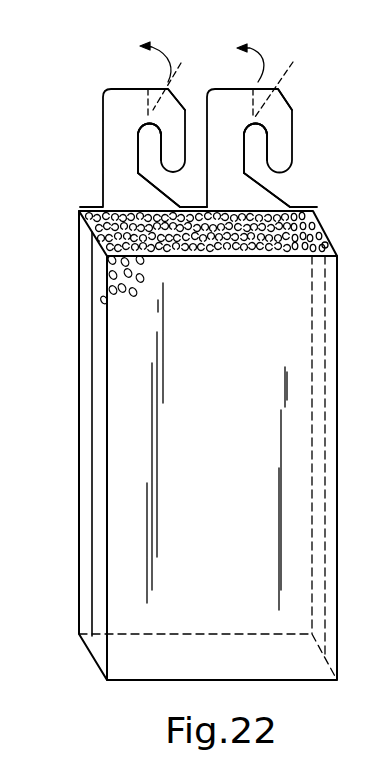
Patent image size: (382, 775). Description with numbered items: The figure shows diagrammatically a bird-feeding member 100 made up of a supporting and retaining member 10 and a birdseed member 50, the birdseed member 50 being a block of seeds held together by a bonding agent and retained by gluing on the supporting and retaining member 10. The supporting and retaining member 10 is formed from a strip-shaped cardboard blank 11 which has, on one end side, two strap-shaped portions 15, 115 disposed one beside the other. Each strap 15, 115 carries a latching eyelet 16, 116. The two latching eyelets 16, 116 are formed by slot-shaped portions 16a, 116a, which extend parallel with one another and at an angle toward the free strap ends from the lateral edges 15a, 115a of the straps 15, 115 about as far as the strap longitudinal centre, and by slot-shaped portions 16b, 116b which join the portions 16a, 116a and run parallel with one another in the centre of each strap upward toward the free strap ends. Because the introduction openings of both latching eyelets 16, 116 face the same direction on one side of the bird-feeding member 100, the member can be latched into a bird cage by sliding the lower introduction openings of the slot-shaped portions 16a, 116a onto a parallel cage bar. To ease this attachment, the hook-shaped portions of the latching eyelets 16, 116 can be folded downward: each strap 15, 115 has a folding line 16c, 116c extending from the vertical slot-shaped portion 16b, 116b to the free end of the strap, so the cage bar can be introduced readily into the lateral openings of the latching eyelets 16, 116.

The bird-feeding member 100 is at (66, 466).
The supporting and retaining member 10 is at (74, 400).
The blank 11 is at (87, 340).
The birdseed member 50 is at (130, 538).
The strap-shaped portion 15 is at (122, 98).
The lateral edge of the strap 15a is at (188, 106).
The latching eyelet 16 is at (142, 152).
The slot-shaped portion 16a is at (168, 178).
The slot-shaped portion 16b is at (143, 135).
The folding line 16c is at (168, 76).
The strap-shaped portion 115 is at (229, 100).
The lateral edge of the strap 115a is at (293, 110).
The latching eyelet 116 is at (258, 153).
The slot-shaped portion 116a is at (272, 181).
The slot-shaped portion 116b is at (253, 137).
The folding line 116c is at (279, 75).